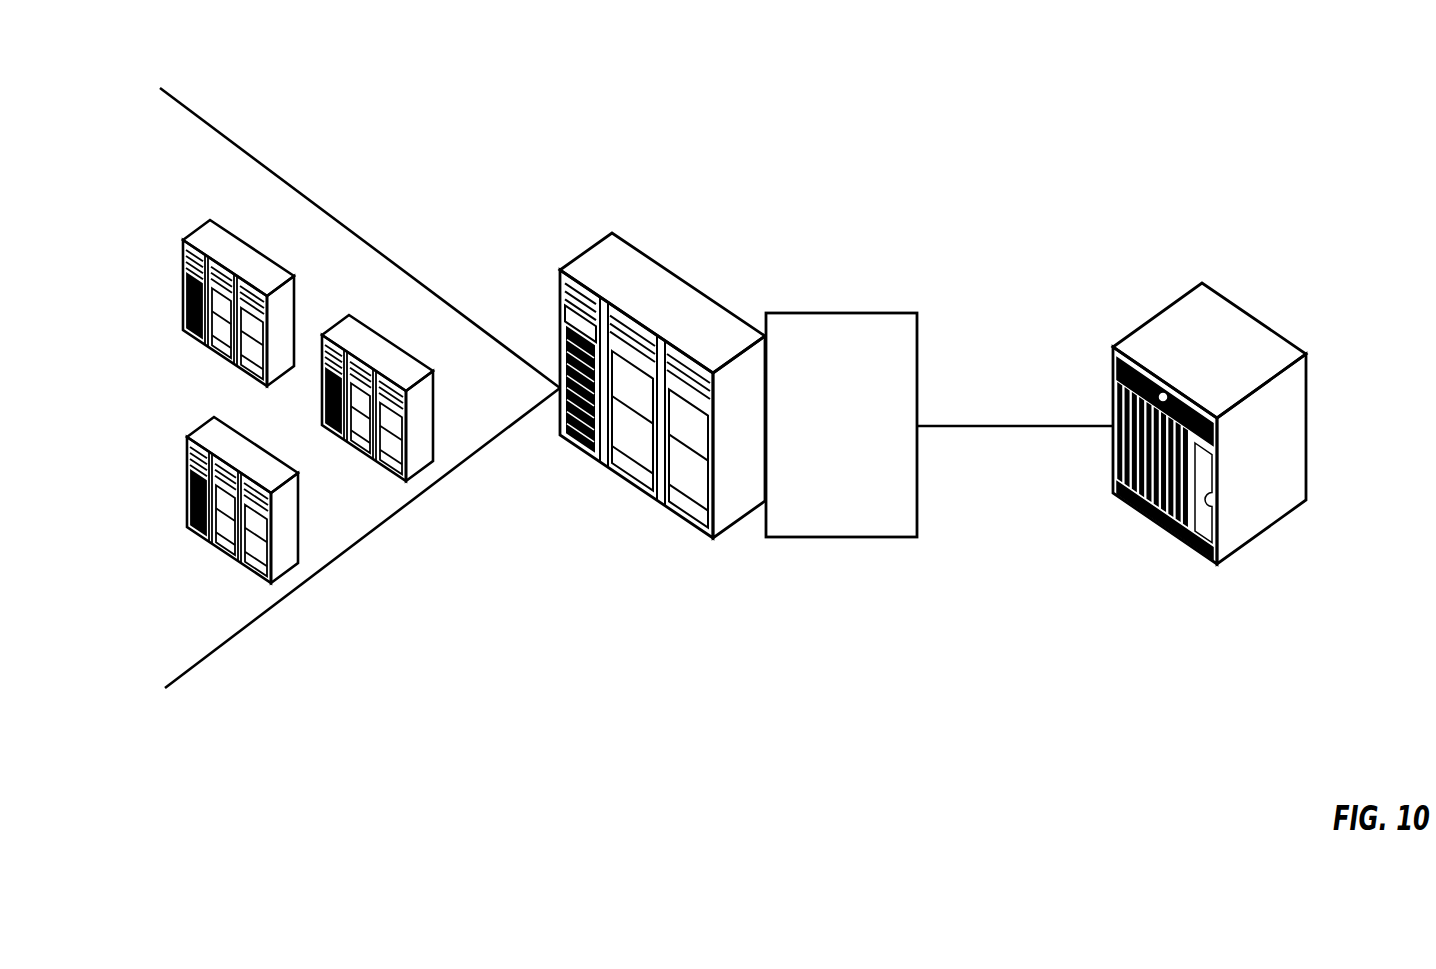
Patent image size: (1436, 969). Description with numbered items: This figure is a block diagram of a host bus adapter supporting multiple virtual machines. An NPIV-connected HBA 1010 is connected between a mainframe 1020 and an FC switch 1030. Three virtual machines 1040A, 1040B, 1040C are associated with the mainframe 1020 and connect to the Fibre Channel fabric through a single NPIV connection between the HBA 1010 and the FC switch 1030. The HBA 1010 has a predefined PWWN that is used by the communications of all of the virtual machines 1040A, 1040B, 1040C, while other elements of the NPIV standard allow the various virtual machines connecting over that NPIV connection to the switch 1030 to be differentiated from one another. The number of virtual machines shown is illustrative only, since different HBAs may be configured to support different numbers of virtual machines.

The HBA 1010 is at (864, 391).
The mainframe 1020 is at (675, 371).
The FC switch 1030 is at (1245, 409).
The virtual machine 1040A is at (299, 561).
The virtual machine 1040B is at (434, 456).
The virtual machine 1040C is at (303, 253).